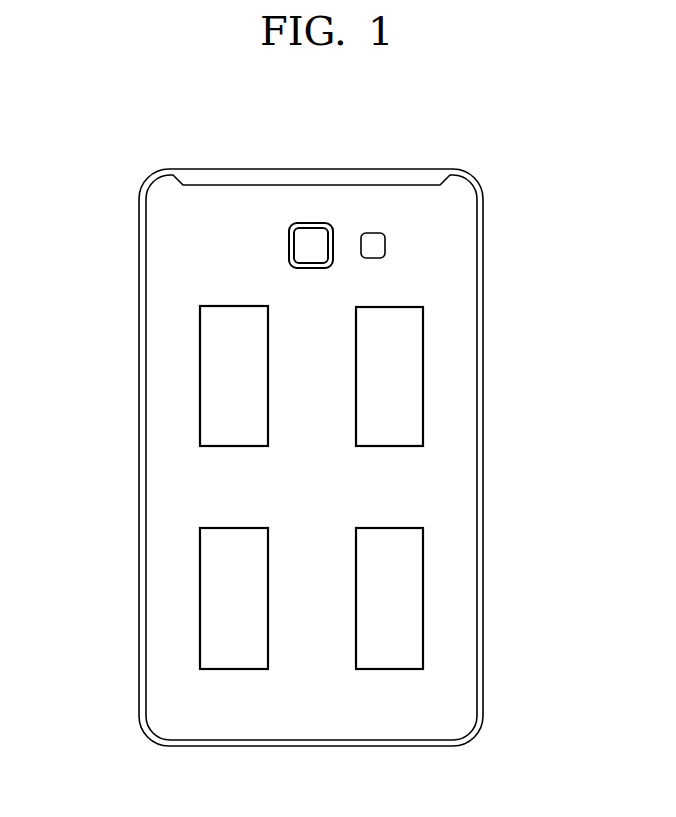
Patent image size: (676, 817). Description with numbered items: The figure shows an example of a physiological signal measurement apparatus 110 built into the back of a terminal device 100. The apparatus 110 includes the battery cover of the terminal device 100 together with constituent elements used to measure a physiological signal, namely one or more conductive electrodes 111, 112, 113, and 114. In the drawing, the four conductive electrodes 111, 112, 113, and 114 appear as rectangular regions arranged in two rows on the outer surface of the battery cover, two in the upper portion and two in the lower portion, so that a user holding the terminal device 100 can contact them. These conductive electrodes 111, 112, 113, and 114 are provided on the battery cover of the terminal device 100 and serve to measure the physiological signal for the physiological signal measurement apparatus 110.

The terminal device 100 is at (533, 141).
The physiological signal measurement apparatus 110 is at (456, 485).
The conductive electrode 111 is at (200, 360).
The conductive electrode 112 is at (423, 355).
The conductive electrode 113 is at (200, 590).
The conductive electrode 114 is at (423, 590).